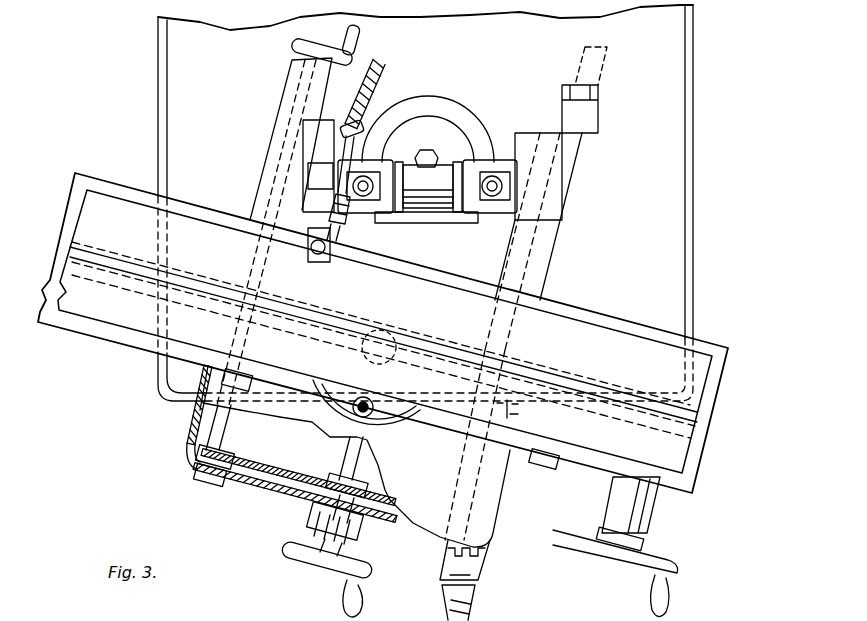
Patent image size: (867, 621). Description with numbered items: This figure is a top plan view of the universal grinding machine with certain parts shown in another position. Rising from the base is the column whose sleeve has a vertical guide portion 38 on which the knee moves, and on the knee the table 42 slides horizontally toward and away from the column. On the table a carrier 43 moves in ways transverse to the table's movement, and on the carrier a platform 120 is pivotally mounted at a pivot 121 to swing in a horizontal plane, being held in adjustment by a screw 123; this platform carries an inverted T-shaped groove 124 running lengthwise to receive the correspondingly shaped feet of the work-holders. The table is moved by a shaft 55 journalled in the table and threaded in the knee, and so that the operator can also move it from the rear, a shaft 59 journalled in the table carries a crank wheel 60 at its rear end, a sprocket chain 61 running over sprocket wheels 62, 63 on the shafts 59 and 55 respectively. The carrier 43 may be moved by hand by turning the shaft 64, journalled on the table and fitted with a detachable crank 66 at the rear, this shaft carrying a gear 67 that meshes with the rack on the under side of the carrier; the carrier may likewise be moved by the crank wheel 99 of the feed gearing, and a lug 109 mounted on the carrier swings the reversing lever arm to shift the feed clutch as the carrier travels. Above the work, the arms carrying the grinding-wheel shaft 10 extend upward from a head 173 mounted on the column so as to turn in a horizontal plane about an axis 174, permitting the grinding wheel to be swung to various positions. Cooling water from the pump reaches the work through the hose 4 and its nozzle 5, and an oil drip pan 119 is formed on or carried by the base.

The hose 4 is at (378, 72).
The nozzle 5 is at (338, 266).
The shaft 10 is at (455, 210).
The vertical guide portion 38 is at (331, 571).
The table 42 is at (462, 515).
The carrier 43 is at (581, 460).
The shaft 55 is at (348, 444).
The shaft 59 is at (266, 247).
The crank wheel 60 is at (308, 56).
The sprocket chain 61 is at (268, 461).
The sprocket wheel 62 is at (193, 478).
The sprocket wheel 63 is at (313, 491).
The shaft 64 is at (474, 462).
The detachable crank 66 is at (598, 78).
The gear 67 is at (520, 412).
The crank wheel 99 is at (588, 550).
The lug 109 is at (244, 384).
The oil drip pan 119 is at (660, 275).
The platform 120 is at (612, 356).
The pivot 121 is at (396, 362).
The screw 123 is at (376, 424).
The inverted T-shaped groove 124 is at (520, 373).
The head 173 is at (445, 146).
The axis 174 is at (425, 155).